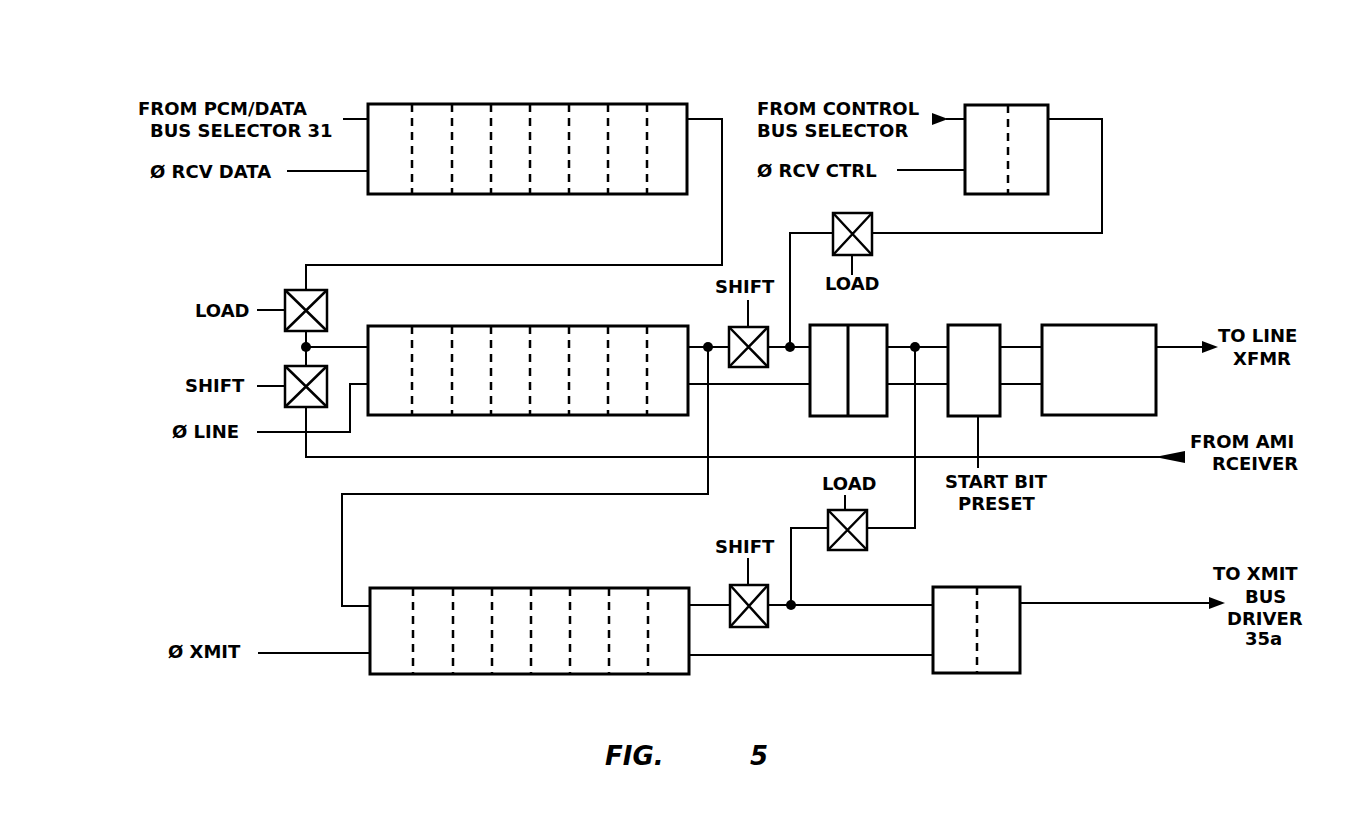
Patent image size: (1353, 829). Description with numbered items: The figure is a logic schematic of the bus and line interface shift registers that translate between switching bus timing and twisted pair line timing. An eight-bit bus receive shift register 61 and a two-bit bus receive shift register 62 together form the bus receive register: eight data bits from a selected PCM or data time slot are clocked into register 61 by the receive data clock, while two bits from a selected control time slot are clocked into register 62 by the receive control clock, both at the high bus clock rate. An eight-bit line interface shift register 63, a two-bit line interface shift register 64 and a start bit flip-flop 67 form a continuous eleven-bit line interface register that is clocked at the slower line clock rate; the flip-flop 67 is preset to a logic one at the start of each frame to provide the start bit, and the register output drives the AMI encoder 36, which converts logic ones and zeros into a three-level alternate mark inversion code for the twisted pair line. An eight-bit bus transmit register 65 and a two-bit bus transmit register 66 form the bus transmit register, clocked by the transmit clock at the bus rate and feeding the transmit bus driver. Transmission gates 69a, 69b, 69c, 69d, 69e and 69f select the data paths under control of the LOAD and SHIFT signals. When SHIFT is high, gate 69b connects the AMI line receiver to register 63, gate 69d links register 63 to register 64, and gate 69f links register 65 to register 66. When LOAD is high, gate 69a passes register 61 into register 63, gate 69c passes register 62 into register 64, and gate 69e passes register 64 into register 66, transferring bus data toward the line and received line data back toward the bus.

The 8-bit bus receive shift register 61 is at (584, 104).
The 2-bit bus receive shift register 62 is at (990, 105).
The 8-bit line interface shift register 63 is at (522, 326).
The 2-bit line interface shift register 64 is at (868, 325).
The start bit flip-flop 67 is at (968, 325).
The AMI encoder 36 is at (1125, 325).
The 8-bit bus transmit register 65 is at (522, 588).
The 2-bit bus transmit register 66 is at (993, 587).
The transmission gate 69a is at (327, 313).
The transmission gate 69b is at (285, 372).
The transmission gate 69c is at (852, 213).
The transmission gate 69d is at (750, 367).
The transmission gate 69e is at (867, 540).
The transmission gate 69f is at (768, 613).